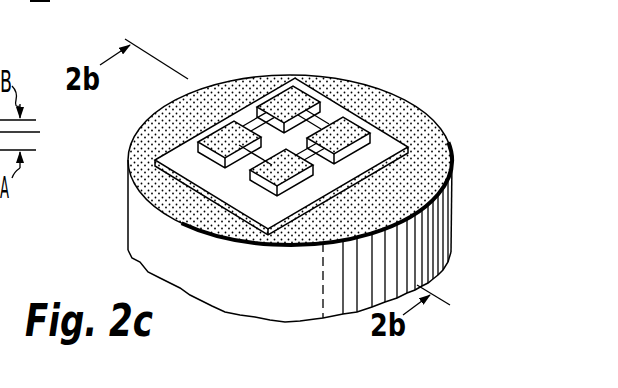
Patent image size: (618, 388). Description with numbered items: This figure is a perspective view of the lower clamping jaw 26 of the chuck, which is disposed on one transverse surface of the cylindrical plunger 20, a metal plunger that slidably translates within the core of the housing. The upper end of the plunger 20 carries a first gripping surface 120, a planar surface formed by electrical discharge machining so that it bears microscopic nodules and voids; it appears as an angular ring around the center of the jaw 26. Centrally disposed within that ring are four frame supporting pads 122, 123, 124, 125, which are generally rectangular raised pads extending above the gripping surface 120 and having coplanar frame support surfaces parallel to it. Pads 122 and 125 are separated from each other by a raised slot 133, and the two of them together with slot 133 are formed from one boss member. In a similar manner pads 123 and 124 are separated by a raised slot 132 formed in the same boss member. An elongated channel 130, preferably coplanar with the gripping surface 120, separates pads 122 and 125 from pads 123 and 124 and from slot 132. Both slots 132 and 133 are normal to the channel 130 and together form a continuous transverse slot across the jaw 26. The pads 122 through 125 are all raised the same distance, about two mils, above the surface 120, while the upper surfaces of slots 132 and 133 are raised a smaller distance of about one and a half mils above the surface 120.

The cylindrical plunger 20 is at (132, 222).
The lower clamping jaw 26 is at (222, 80).
The first gripping surface 120 is at (312, 88).
The frame supporting pad 122 is at (294, 92).
The frame supporting pad 123 is at (367, 138).
The frame supporting pad 124 is at (275, 173).
The frame supporting pad 125 is at (215, 140).
The elongated channel 130 is at (346, 122).
The raised slot 132 is at (320, 163).
The raised slot 133 is at (250, 120).